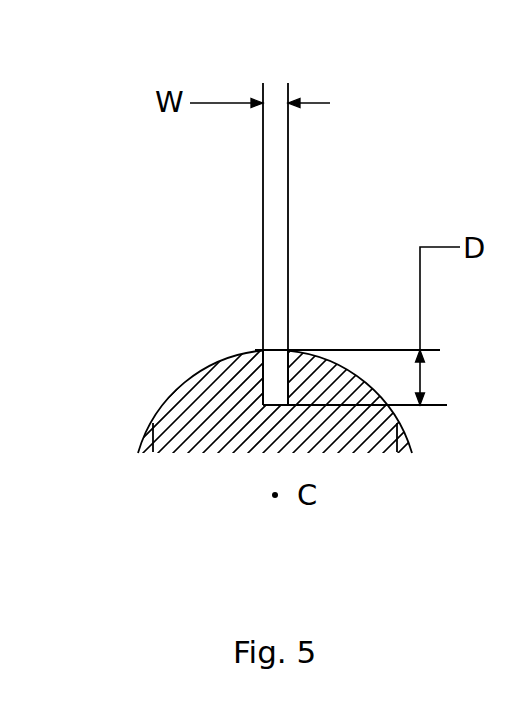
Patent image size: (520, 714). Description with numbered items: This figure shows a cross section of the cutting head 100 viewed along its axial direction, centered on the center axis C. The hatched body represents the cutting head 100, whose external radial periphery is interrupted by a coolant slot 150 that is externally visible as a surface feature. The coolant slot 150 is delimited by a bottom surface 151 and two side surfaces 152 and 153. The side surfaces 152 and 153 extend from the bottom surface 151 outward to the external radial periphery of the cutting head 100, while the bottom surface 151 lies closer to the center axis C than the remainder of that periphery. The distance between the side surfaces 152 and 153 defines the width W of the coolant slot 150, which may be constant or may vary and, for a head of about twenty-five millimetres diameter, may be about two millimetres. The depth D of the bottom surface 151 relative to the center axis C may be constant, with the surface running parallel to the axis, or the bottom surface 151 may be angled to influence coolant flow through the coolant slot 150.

The cutting head 100 is at (170, 392).
The coolant slot 150 is at (278, 349).
The bottom surface 151 is at (266, 410).
The side surface 152 is at (263, 372).
The side surface 153 is at (288, 370).